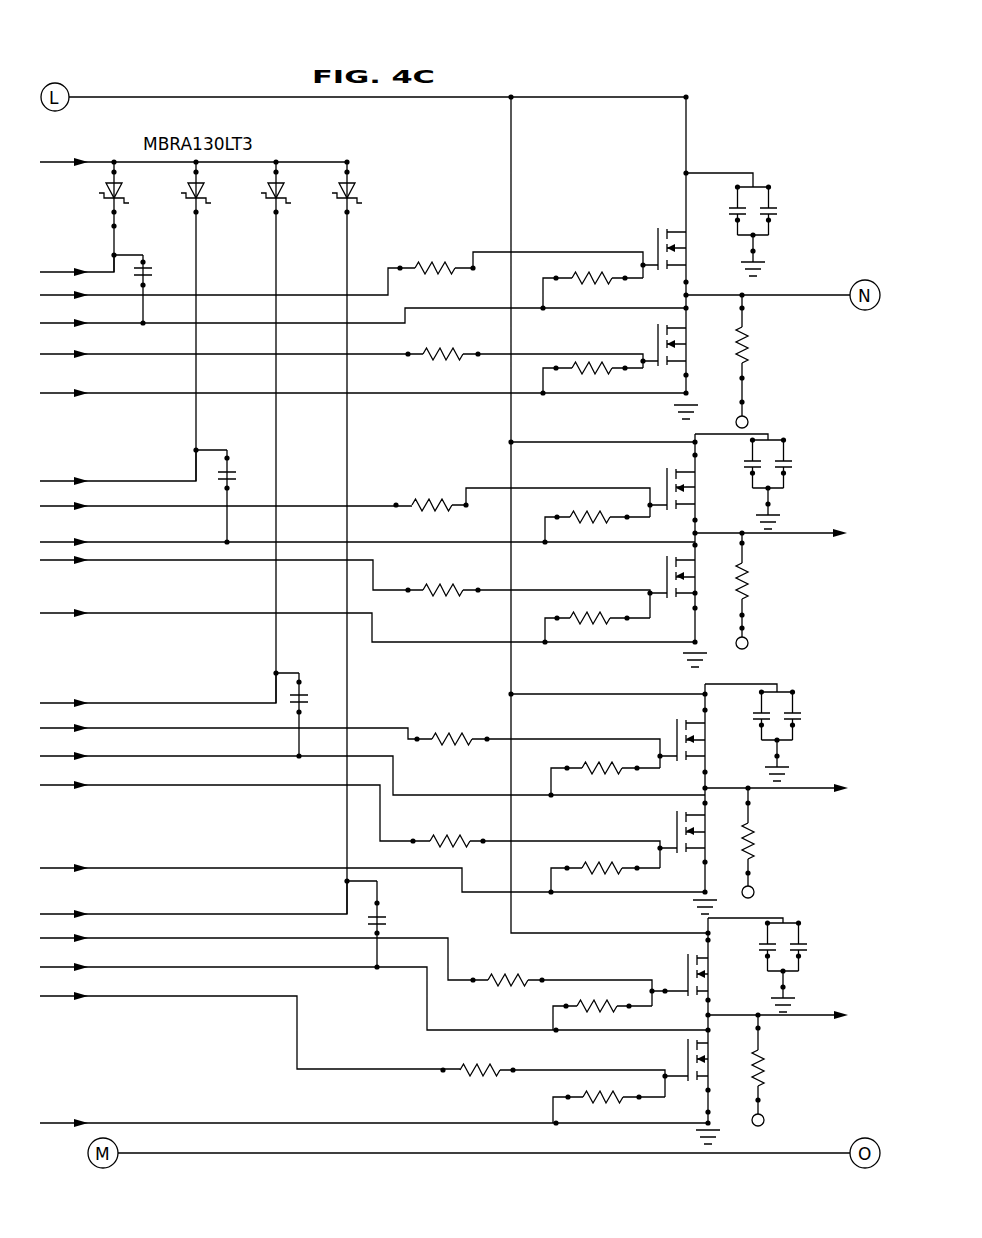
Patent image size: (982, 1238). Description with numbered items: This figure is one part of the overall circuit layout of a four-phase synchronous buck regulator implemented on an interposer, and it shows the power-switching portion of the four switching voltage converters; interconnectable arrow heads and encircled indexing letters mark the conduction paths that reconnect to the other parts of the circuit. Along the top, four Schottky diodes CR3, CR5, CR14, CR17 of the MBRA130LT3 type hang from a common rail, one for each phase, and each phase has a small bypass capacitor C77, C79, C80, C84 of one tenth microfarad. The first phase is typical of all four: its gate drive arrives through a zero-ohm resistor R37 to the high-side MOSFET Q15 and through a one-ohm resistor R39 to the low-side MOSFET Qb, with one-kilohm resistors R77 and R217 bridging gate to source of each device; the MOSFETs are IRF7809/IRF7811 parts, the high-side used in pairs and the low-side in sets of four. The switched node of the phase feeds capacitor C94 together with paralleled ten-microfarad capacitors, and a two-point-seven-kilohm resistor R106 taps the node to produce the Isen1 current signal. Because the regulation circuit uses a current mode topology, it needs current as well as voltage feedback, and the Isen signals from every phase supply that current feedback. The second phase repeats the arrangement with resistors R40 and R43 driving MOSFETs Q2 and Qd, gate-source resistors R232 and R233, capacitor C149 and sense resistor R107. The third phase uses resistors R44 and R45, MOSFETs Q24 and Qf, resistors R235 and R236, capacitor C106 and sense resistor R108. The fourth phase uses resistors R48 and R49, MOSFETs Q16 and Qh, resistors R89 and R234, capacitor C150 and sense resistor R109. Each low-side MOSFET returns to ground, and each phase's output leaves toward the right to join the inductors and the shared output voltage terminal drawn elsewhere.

The diode CR3 is at (135, 196).
The Schottky diode MBRA130LT3 CR5 is at (214, 191).
The Schottky diode MBRA130LT3 CR14 is at (297, 187).
The Schottky diode MBRA130LT3 CR17 is at (367, 184).
The capacitor C77 is at (162, 258).
The 0.1uF bypass capacitor C79 is at (241, 453).
The 0.1uF bypass capacitor C80 is at (317, 675).
The 0.1uF bypass capacitor C84 is at (404, 905).
The resistor R37 is at (435, 267).
The resistor R39 is at (441, 351).
The resistor R77 is at (589, 280).
The resistor R217 is at (588, 389).
The MOSFET Q15 is at (624, 241).
The low-side MOSFET IRF7811 x4 (Q21) Qb is at (652, 339).
The capacitor C94 is at (758, 221).
The resistor R106 is at (767, 361).
The 0 ohm gate resistor R40 is at (432, 508).
The 1 ohm gate resistor R43 is at (442, 589).
The 1k gate-source resistor R232 is at (590, 518).
The 1k gate-source resistor R233 is at (594, 618).
The high-side MOSFET IRF7811 x2 Q2 is at (624, 478).
The low-side MOSFET IRF7811 x4 (Q5) Qd is at (653, 573).
The 1uF / 10uF x4 output capacitors Ce C149 is at (773, 479).
The 2.7k current sense resistor to Isen2 R107 is at (768, 592).
The 0 ohm gate resistor R44 is at (451, 738).
The 1 ohm gate resistor R45 is at (450, 840).
The 1k gate-source resistor R235 is at (597, 765).
The 1k gate-source resistor R236 is at (604, 867).
The high-side MOSFET IRF7811 x2 Q24 is at (644, 730).
The low-side MOSFET IRF7811 x4 Qf is at (668, 824).
The 1uF / 10uF x4 output capacitors Cf C106 is at (783, 726).
The 2.7k current sense resistor to Isen3 R108 is at (774, 845).
The 0 ohm gate resistor R48 is at (507, 980).
The 1 ohm gate resistor R49 is at (480, 1071).
The 1k gate-source resistor R89 is at (597, 1006).
The 1k gate-source resistor R234 is at (606, 1095).
The high-side MOSFET IRF7811 x2 Q16 is at (626, 966).
The low-side MOSFET IRF7811 x4 (Q23) Qh is at (668, 1057).
The 1uF / 10uF x4 output capacitors Cg C150 is at (786, 959).
The 2.7k current sense resistor to Isen4 R109 is at (785, 1072).